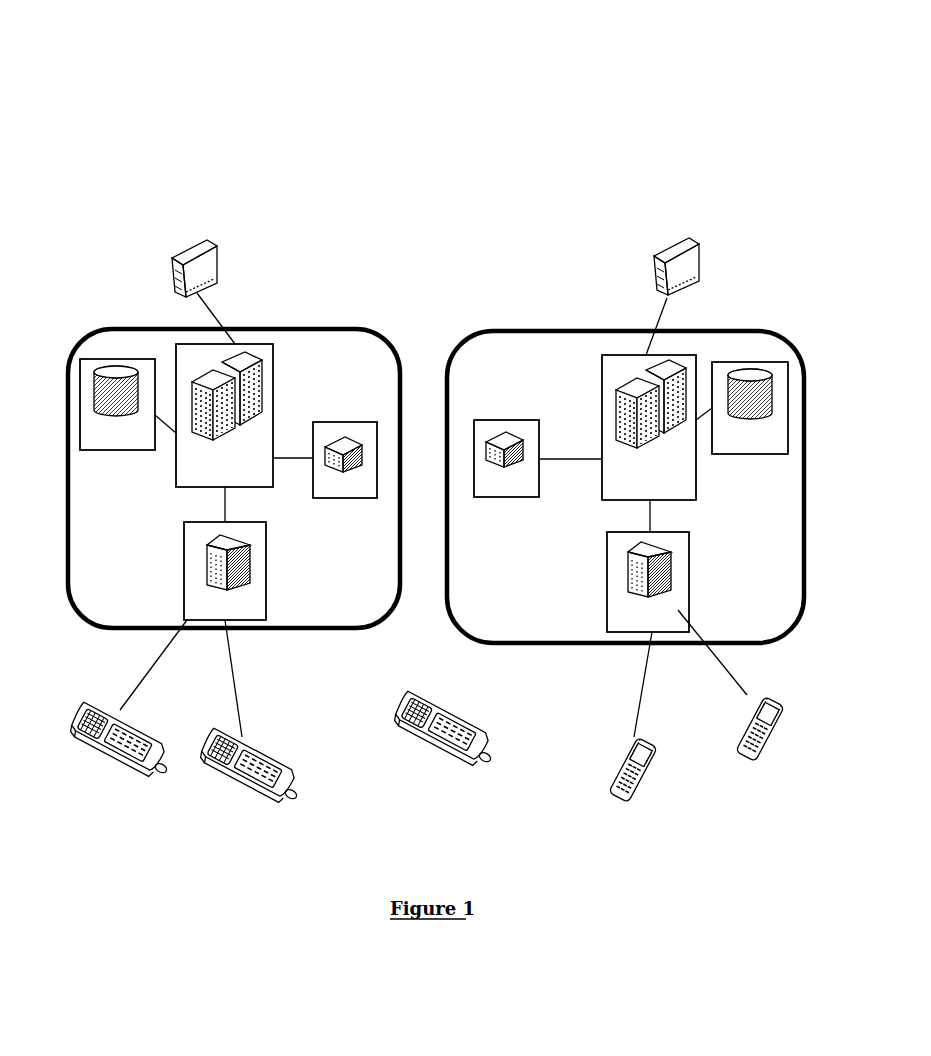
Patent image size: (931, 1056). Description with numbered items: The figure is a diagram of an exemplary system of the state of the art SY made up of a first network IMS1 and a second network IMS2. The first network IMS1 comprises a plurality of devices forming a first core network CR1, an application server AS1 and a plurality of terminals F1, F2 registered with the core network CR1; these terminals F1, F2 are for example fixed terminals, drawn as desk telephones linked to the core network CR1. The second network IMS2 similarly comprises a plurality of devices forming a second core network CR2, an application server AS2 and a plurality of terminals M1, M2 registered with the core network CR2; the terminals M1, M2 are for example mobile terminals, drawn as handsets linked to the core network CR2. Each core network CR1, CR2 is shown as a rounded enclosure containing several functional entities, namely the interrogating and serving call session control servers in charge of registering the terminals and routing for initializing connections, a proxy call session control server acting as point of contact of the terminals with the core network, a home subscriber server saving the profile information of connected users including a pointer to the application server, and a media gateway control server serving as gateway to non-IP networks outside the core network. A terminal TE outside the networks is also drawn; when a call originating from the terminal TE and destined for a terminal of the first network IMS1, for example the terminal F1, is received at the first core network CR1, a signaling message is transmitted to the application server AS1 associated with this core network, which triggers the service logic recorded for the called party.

The system SY is at (235, 72).
The first network IMS1 is at (268, 189).
The second network IMS2 is at (589, 199).
The application server AS1 is at (172, 263).
The application server AS2 is at (698, 234).
The first core network CR1 is at (326, 328).
The second core network CR2 is at (506, 330).
The terminal F1 is at (118, 764).
The terminal F2 is at (252, 743).
The terminal TE is at (435, 752).
The terminal M1 is at (647, 800).
The terminal M2 is at (762, 760).